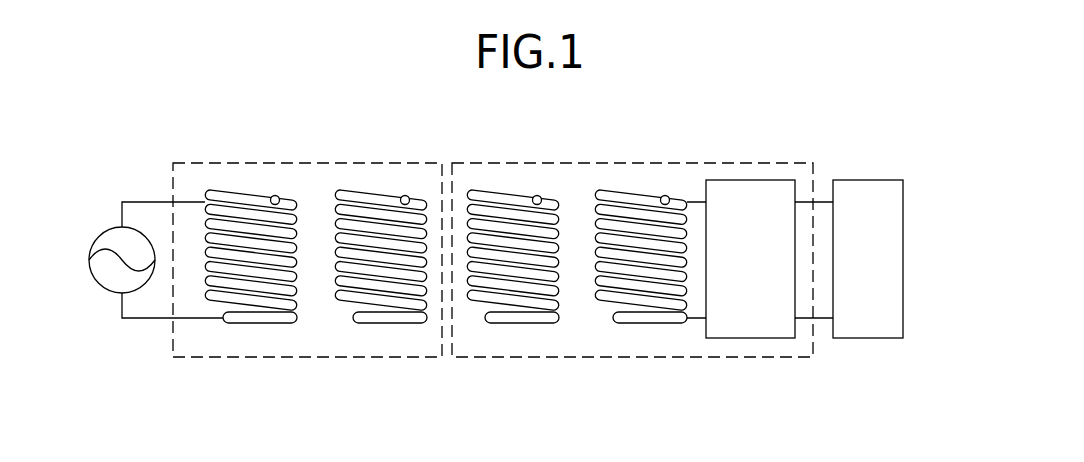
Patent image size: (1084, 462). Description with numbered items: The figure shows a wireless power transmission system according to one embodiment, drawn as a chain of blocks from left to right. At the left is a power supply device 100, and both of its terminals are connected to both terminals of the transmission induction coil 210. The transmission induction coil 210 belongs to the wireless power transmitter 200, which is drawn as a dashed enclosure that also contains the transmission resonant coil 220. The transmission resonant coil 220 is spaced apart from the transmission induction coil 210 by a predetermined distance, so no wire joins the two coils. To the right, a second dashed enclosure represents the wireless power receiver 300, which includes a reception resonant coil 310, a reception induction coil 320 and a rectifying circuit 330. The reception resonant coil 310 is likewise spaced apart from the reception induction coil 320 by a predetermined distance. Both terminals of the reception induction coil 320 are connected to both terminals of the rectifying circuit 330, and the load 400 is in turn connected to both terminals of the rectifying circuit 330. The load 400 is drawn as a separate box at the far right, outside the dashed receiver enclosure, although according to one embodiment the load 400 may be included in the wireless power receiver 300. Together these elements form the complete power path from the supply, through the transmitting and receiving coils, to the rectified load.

The power supply device 100 is at (97, 228).
The wireless power transmitter 200 is at (196, 163).
The transmission induction coil 210 is at (263, 212).
The transmission resonant coil 220 is at (380, 208).
The wireless power receiver 300 is at (563, 163).
The reception resonant coil 310 is at (500, 205).
The reception induction coil 320 is at (650, 208).
The rectifying circuit 330 is at (750, 180).
The load 400 is at (867, 180).